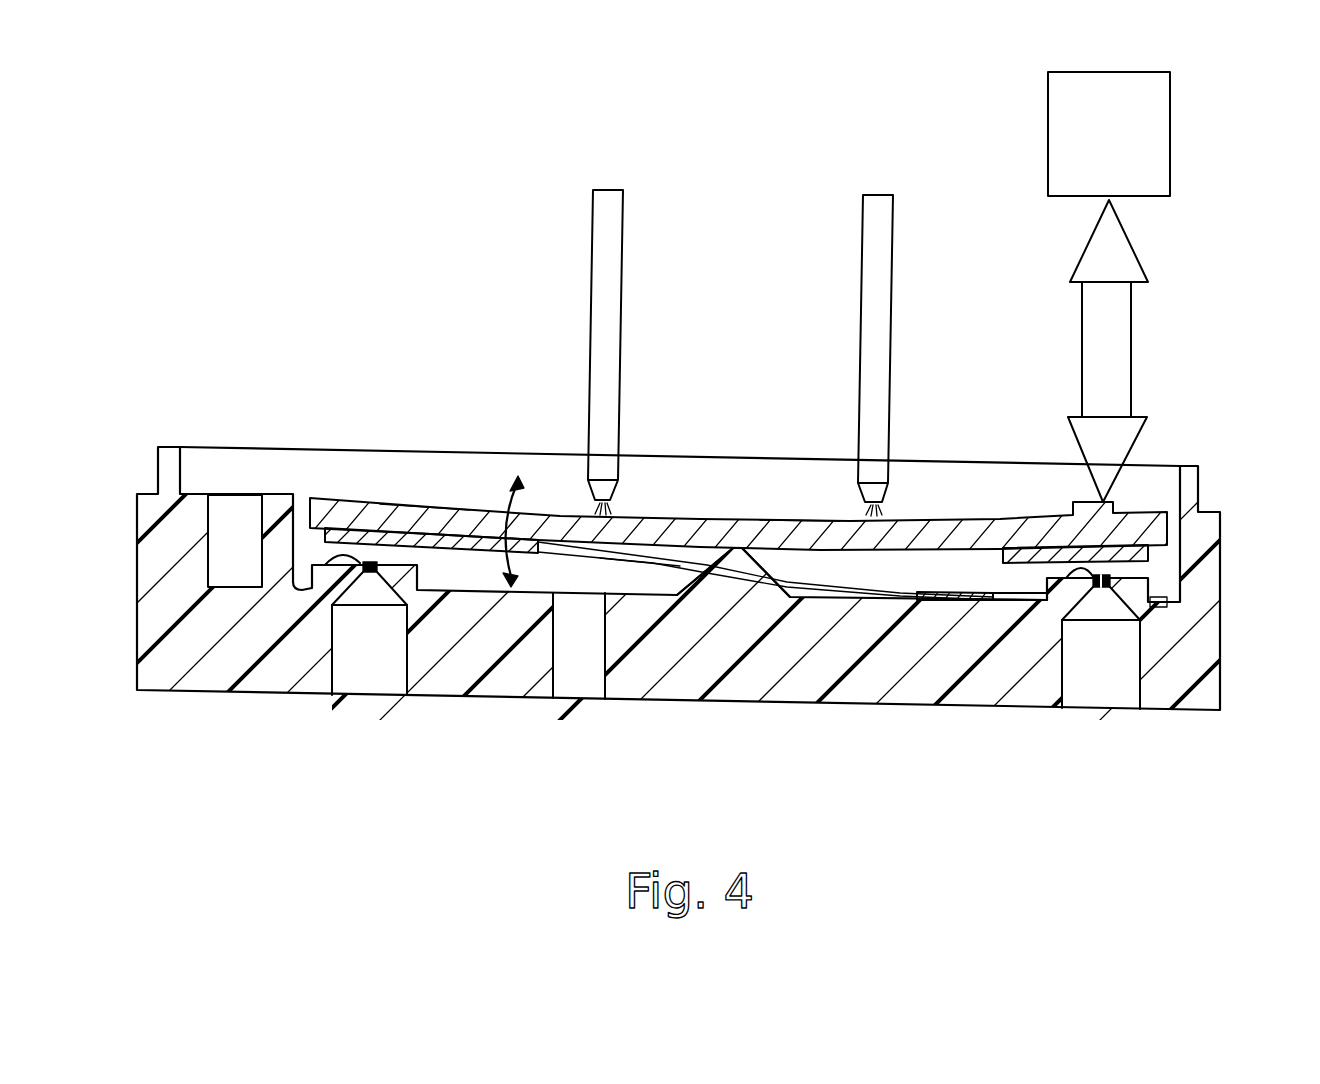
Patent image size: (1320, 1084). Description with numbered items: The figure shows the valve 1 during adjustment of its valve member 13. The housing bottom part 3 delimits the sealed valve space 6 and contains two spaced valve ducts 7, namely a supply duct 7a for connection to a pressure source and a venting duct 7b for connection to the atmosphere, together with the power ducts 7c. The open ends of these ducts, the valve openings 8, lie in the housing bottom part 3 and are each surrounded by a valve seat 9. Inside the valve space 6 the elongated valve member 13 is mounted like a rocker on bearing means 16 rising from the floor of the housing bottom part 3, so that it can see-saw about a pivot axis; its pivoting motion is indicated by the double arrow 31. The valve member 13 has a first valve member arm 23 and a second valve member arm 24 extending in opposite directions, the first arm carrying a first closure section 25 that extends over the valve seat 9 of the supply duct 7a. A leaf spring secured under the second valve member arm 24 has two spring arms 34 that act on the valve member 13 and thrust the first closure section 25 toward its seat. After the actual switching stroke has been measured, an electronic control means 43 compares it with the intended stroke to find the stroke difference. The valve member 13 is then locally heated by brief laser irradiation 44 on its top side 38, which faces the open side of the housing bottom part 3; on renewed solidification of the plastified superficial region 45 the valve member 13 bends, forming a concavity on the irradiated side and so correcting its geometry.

The valve 1 is at (1234, 388).
The housing bottom part 3 is at (172, 690).
The valve space 6 is at (883, 577).
The valve ducts 7 is at (736, 695).
The supply duct 7a is at (392, 692).
The venting duct 7b is at (1112, 702).
The power ducts 7c is at (578, 690).
The valve openings 8 is at (372, 578).
The valve seat 9 is at (345, 556).
The valve member 13 is at (720, 515).
The bearing means 16 is at (737, 594).
The first valve member arm 23 is at (427, 505).
The second valve member arm 24 is at (1028, 514).
The first closure section 25 is at (358, 515).
The double arrow 31 is at (505, 518).
The spring arms 34 is at (648, 565).
The top side 38 is at (801, 503).
The electronic control means 43 is at (1128, 137).
The laser irradiation 44 is at (610, 263).
The plastified superficial region 45 is at (624, 504).